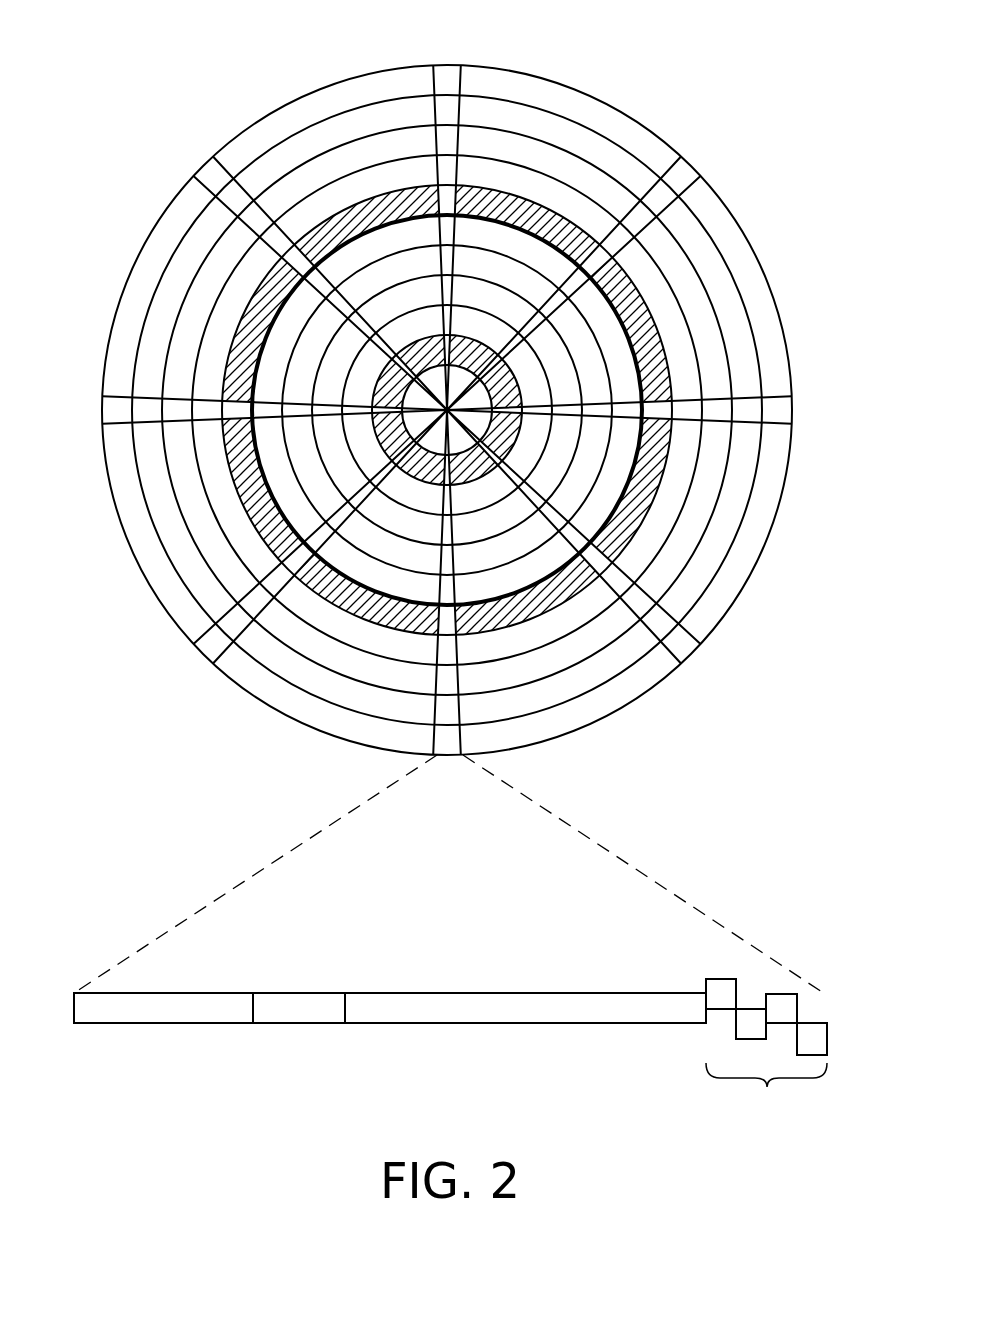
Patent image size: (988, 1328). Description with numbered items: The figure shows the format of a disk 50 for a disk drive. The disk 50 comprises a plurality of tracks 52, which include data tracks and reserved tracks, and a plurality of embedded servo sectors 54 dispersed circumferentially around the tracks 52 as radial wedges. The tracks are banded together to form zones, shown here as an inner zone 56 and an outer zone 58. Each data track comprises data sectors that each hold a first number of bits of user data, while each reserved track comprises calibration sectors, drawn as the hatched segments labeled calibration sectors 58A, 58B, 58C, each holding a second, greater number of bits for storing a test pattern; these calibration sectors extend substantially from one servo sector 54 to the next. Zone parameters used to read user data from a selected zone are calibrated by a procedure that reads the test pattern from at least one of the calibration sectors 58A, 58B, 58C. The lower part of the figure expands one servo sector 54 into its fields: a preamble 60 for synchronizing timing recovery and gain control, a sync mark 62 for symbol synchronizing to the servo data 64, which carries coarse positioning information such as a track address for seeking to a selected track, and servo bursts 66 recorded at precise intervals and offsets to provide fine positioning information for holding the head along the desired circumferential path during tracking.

The disk 50 is at (186, 66).
The tracks 52 is at (565, 115).
The embedded servo sector 54 is at (449, 64).
The inner zone 56 is at (317, 480).
The outer zone 58 is at (188, 480).
The calibration sector 58A is at (538, 602).
The calibration sector 58B is at (637, 495).
The calibration sector 58C is at (640, 322).
The preamble 60 is at (143, 1023).
The sync mark 62 is at (297, 1023).
The servo data 64 is at (510, 1023).
The servo bursts 66 is at (693, 958).